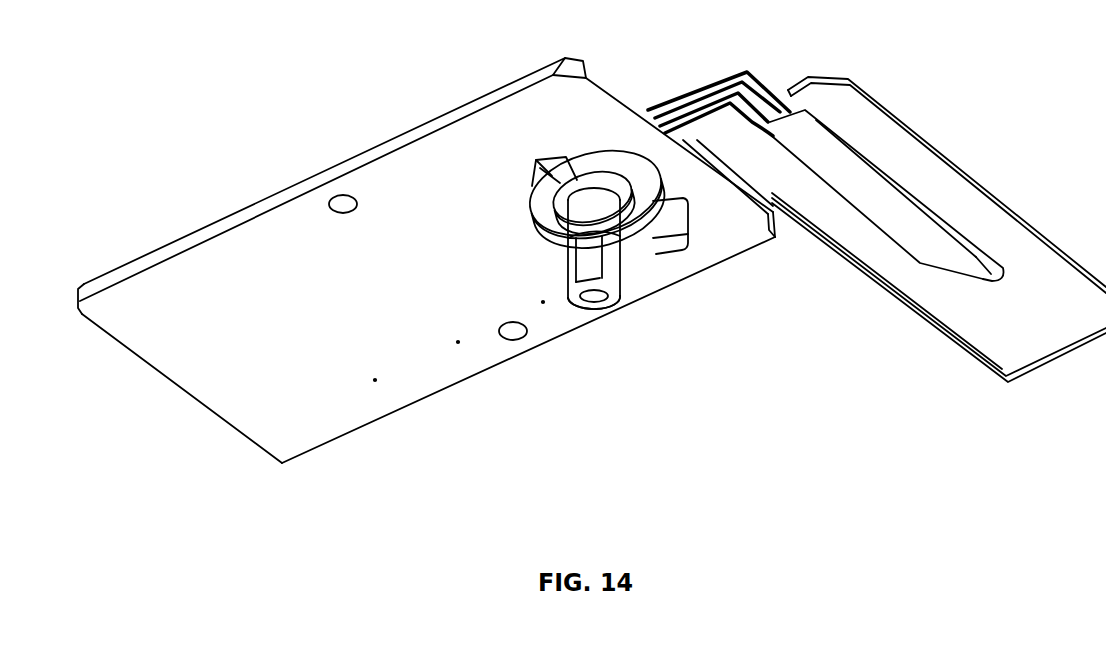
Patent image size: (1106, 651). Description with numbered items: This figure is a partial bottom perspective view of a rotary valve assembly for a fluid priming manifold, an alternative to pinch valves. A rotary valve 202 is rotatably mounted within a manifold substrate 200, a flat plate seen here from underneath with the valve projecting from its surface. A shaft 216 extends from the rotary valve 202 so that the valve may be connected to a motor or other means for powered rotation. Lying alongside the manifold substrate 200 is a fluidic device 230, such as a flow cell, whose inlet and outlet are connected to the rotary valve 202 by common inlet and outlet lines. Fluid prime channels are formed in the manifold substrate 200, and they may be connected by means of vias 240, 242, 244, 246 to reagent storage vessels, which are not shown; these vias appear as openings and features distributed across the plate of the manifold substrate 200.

The manifold substrate 200 is at (474, 84).
The rotary valve 202 is at (658, 274).
The shaft 216 is at (593, 306).
The fluidic device 230 is at (988, 164).
The via 240 is at (291, 418).
The via 242 is at (147, 308).
The via 244 is at (232, 270).
The via 246 is at (315, 232).